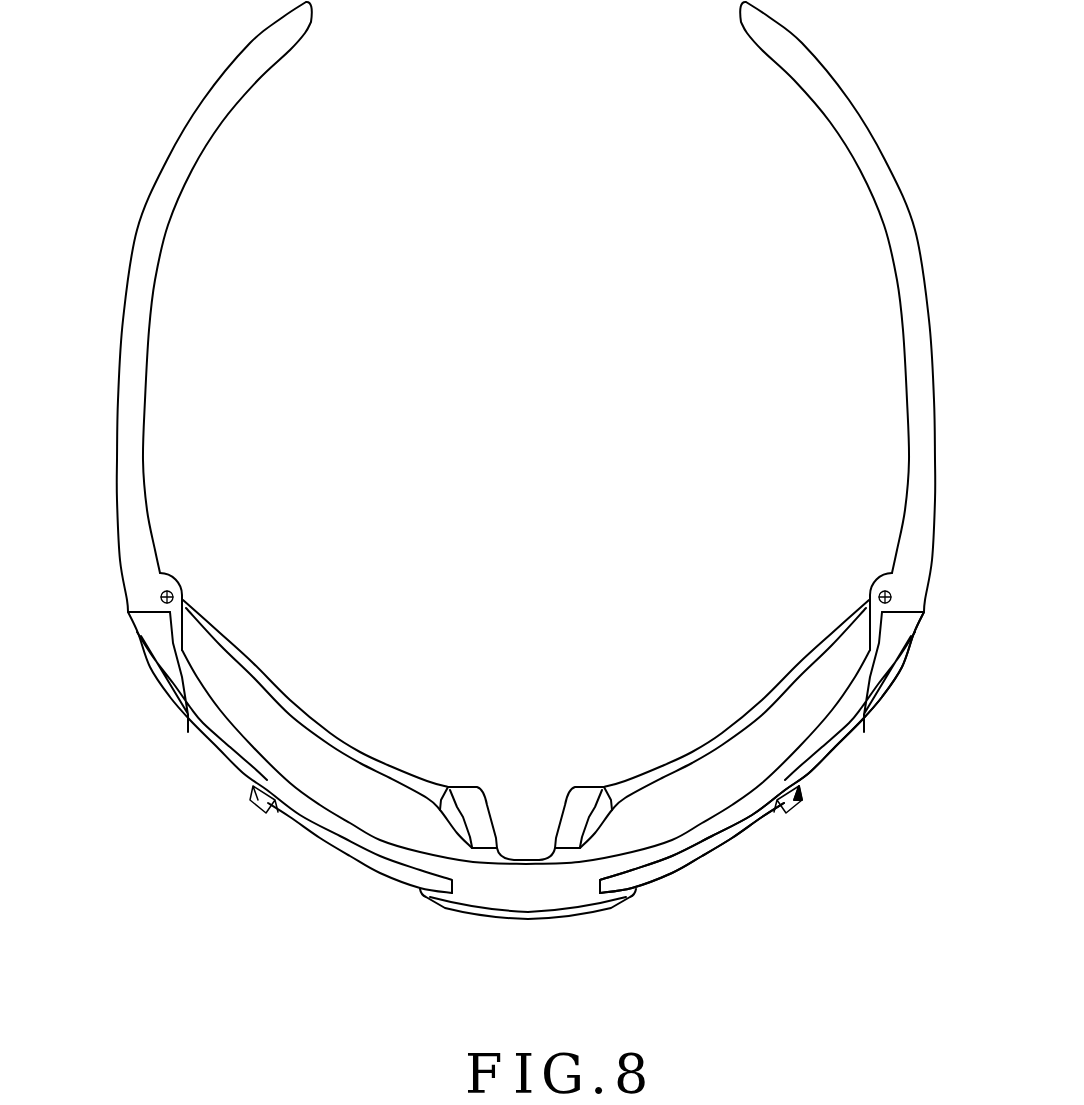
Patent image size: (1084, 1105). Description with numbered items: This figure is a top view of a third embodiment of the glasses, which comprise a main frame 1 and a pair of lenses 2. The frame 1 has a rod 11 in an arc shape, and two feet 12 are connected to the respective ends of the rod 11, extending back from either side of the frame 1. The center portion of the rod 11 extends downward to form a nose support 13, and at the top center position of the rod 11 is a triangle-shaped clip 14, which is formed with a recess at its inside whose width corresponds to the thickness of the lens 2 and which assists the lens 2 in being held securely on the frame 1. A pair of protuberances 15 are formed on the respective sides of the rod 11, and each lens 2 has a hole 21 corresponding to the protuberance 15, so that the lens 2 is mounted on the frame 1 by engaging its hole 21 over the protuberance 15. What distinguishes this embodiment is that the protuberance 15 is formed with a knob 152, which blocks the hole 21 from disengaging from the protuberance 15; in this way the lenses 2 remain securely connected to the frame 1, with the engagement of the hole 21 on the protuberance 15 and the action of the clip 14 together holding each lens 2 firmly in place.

The main frame 1 is at (685, 543).
The rod 11 is at (695, 835).
The feet 12 is at (920, 441).
The nose support 13 is at (573, 808).
The clip 14 is at (488, 895).
The protuberance 15 is at (793, 800).
The knob 152 is at (800, 800).
The lens 2 is at (728, 790).
The hole 21 is at (777, 812).